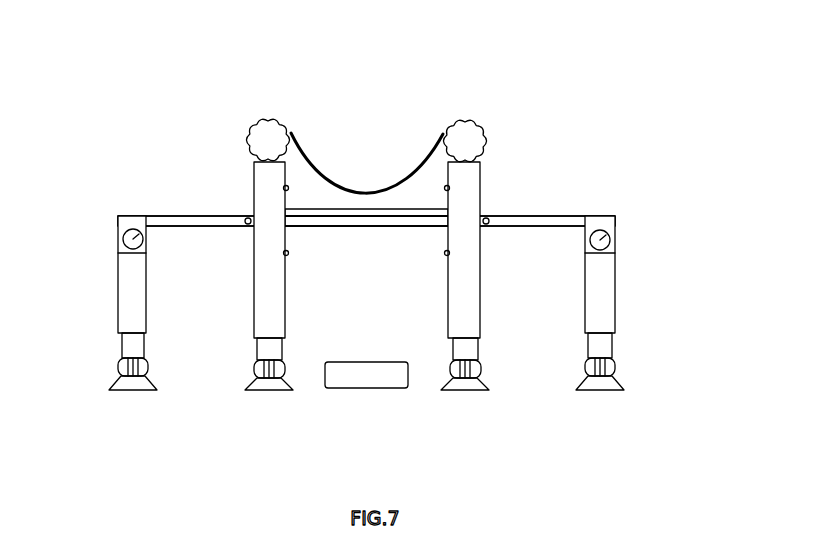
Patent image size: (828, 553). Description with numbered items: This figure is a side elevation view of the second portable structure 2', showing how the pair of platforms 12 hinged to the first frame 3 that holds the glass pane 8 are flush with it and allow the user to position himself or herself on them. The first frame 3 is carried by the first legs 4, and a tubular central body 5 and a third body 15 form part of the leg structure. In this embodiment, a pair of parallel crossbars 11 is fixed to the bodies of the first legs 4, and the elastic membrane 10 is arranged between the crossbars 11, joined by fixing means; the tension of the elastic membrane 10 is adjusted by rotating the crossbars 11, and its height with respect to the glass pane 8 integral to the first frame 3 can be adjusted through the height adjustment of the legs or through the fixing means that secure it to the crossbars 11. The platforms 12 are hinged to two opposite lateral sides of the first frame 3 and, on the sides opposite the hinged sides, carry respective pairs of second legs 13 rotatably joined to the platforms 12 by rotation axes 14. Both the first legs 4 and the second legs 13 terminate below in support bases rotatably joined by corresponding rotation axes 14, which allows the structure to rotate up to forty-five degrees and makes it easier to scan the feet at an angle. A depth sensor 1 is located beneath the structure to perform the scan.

The depth sensor 1 is at (363, 375).
The second portable structure 2' is at (405, 162).
The first frame 3 is at (355, 223).
The first legs 4 is at (240, 320).
The tubular central body 5 is at (448, 270).
The glass pane 8 is at (332, 209).
The elastic membrane 10 is at (305, 143).
The crossbar 11 is at (265, 118).
The platform 12 is at (168, 217).
The second legs 13 is at (102, 289).
The rotation axis 14 is at (132, 240).
The third body 15 is at (122, 347).